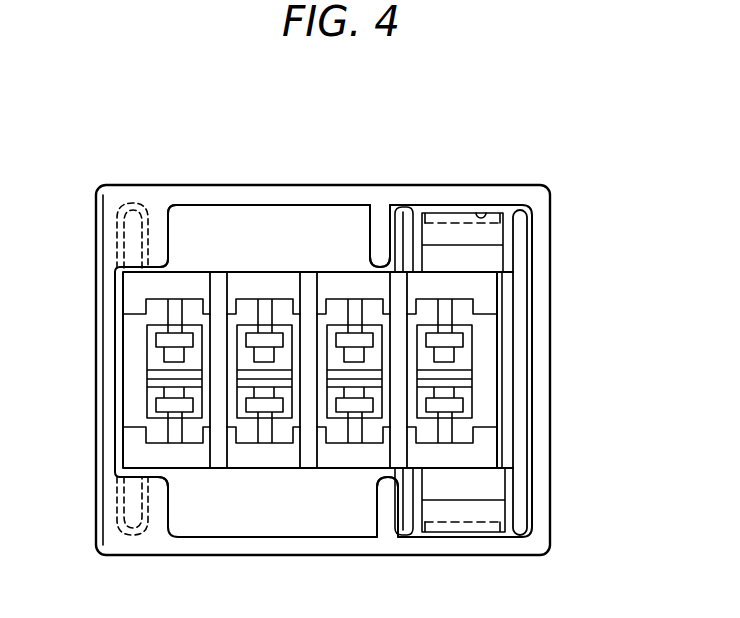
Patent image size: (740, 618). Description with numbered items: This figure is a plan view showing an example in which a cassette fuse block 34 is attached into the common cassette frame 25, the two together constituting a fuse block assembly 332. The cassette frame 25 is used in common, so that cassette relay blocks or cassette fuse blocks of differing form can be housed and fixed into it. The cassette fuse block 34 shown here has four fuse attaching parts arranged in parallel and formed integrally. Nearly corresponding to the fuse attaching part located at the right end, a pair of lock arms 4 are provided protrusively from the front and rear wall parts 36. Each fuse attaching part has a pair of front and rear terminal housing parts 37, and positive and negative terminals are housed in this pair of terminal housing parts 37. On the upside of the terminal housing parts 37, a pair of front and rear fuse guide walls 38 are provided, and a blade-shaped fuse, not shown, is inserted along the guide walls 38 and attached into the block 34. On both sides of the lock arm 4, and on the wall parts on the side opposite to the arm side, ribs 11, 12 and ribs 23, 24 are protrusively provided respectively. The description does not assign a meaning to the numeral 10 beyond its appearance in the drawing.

The lock arm 4 is at (442, 232).
The notch 10 is at (481, 211).
The rib 11 is at (400, 209).
The rib 12 is at (124, 214).
The rib 23 is at (200, 270).
The rib 24 is at (163, 240).
The cassette frame 25 is at (267, 181).
The cassette fuse block 34 is at (290, 261).
The wall part 36 is at (470, 270).
The terminal housing part 37 is at (342, 302).
The fuse guide wall 38 is at (250, 460).
The fuse block assembly 332 is at (628, 154).